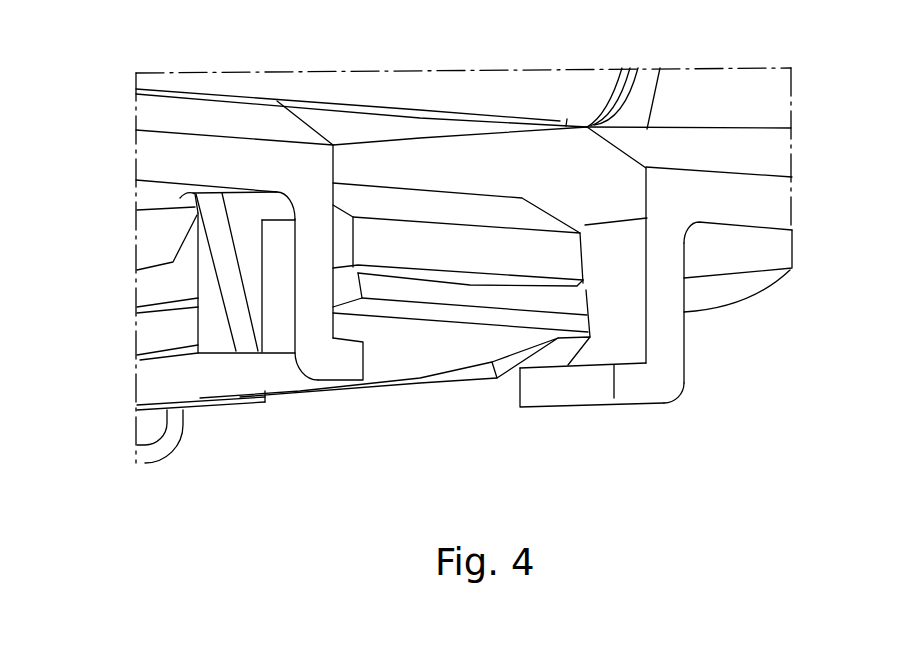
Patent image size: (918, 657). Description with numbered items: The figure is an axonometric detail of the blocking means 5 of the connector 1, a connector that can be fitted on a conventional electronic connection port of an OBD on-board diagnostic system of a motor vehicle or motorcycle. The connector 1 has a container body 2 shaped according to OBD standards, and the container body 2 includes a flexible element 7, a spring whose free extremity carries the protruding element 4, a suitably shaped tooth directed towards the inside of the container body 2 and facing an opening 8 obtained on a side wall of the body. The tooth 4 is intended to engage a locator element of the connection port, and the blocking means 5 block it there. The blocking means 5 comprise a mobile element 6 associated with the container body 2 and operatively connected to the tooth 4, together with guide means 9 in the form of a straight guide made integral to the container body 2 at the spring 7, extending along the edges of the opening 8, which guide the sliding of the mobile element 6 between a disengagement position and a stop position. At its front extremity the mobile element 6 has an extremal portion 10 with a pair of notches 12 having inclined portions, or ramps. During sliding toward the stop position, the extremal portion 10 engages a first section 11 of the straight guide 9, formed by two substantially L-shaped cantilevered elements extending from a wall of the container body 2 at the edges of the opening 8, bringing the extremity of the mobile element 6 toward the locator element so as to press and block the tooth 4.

The connector 1 is at (720, 505).
The container body 2 is at (753, 157).
The protruding element 4 is at (453, 212).
The blocking means 5 is at (413, 392).
The mobile element 6 is at (153, 333).
The flexible element 7 is at (147, 287).
The opening 8 is at (578, 167).
The guide means 9 is at (243, 387).
The extremal portion 10 is at (450, 342).
The first section 11 is at (322, 355).
The notches 12 is at (545, 357).